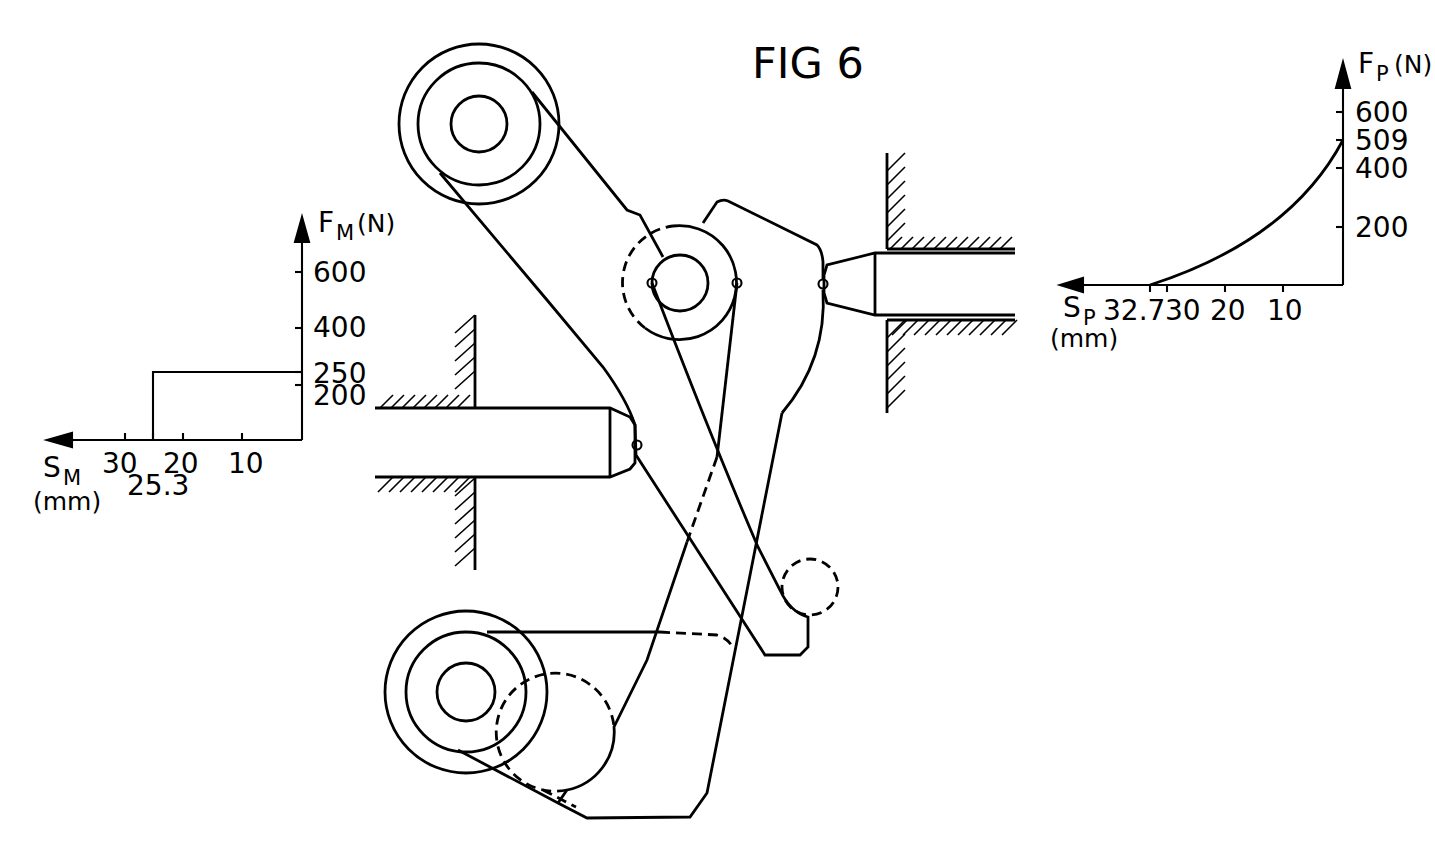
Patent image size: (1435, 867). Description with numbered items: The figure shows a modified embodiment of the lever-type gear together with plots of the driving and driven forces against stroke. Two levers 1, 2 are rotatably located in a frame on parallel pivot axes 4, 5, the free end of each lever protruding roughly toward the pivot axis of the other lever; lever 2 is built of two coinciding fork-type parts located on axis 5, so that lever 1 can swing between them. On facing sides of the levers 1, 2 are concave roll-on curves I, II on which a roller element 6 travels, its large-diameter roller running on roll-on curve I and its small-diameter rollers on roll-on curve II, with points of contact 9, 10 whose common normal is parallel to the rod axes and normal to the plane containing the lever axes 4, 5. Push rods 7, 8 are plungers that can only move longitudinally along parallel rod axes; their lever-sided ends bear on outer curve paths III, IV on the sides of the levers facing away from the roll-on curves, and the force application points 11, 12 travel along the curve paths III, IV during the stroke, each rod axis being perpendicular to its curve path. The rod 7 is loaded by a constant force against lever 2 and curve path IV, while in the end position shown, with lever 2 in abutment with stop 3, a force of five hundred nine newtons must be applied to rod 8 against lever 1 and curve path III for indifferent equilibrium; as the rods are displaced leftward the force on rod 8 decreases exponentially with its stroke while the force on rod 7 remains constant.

The lever 1 is at (760, 240).
The lever 2 is at (583, 180).
The stop 3 is at (813, 583).
The pivot axis 4 is at (455, 700).
The pivot axis 5 is at (495, 122).
The roller element 6 is at (682, 240).
The push rod 7 is at (507, 463).
The push rod 8 is at (960, 310).
The point of contact 9 is at (743, 283).
The point of contact 10 is at (648, 283).
The force application point 11 is at (828, 276).
The force application point 12 is at (641, 444).
The roll-on curve I is at (725, 372).
The roll-on curve II is at (682, 377).
The curve path III is at (802, 372).
The curve path IV is at (628, 408).